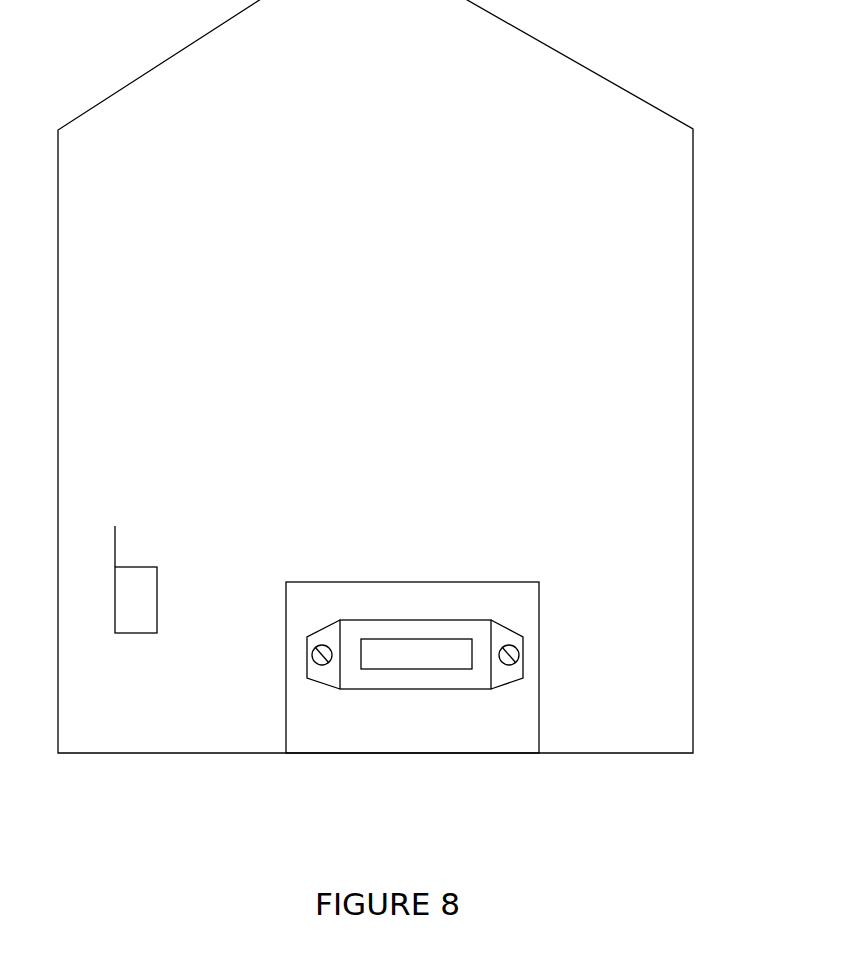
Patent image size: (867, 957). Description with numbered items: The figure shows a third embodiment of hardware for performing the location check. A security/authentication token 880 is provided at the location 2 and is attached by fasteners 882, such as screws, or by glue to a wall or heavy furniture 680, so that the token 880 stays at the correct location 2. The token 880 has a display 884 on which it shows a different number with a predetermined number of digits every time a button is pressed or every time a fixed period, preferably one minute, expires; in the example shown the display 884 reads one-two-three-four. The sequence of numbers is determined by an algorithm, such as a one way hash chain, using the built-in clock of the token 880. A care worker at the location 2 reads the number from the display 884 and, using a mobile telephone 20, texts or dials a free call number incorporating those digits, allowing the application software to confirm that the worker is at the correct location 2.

The location 2 is at (693, 493).
The mobile telephone 20 is at (132, 575).
The wall or heavy furniture 680 is at (523, 582).
The security/authentication token 880 is at (434, 627).
The fasteners 882 is at (312, 655).
The display 884 is at (405, 633).